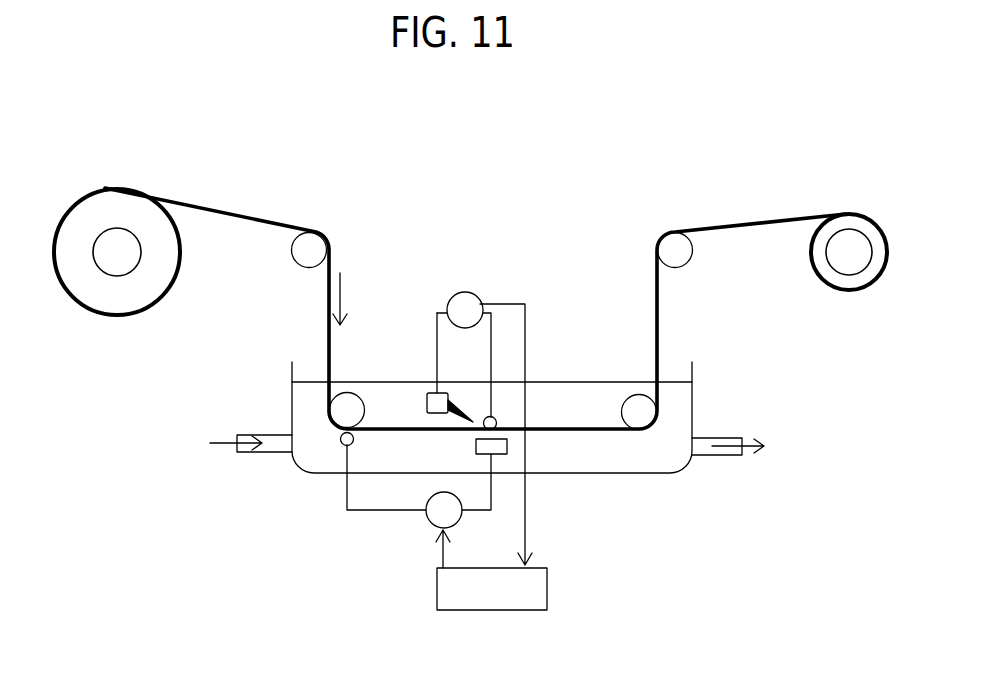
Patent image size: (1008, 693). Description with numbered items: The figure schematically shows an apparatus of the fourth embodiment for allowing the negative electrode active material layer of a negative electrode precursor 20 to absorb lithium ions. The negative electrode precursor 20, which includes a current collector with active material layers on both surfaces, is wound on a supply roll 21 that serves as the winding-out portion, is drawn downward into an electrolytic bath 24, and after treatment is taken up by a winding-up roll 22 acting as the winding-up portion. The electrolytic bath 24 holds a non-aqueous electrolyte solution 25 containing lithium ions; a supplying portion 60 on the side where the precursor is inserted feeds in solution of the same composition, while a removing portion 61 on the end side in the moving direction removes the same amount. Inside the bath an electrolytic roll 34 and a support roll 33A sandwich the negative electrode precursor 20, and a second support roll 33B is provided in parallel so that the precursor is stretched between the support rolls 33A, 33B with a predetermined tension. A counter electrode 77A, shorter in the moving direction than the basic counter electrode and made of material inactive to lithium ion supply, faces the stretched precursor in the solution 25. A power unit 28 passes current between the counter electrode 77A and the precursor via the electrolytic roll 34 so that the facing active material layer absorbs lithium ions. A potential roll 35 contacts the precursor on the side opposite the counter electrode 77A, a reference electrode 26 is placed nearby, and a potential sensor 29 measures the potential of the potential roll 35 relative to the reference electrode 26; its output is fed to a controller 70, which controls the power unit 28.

The negative electrode precursor 20 is at (260, 215).
The supply roll 21 is at (132, 247).
The winding-up roll 22 is at (837, 240).
The electrolytic bath 24 is at (667, 475).
The non-aqueous electrolyte solution 25 is at (588, 466).
The reference electrode 26 is at (441, 397).
The power unit 28 is at (427, 520).
The potential sensor 29 is at (452, 297).
The support roll 33A is at (343, 408).
The support roll 33B is at (643, 416).
The electrolytic roll 34 is at (343, 443).
The potential roll 35 is at (485, 428).
The supplying portion 60 is at (237, 435).
The removing portion 61 is at (740, 437).
The controller 70 is at (547, 610).
The counter electrode 77A is at (503, 443).